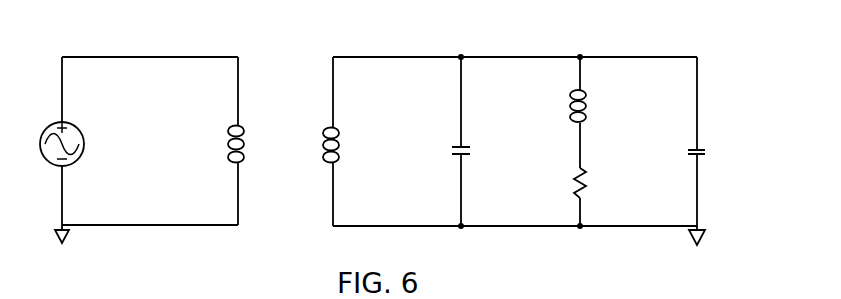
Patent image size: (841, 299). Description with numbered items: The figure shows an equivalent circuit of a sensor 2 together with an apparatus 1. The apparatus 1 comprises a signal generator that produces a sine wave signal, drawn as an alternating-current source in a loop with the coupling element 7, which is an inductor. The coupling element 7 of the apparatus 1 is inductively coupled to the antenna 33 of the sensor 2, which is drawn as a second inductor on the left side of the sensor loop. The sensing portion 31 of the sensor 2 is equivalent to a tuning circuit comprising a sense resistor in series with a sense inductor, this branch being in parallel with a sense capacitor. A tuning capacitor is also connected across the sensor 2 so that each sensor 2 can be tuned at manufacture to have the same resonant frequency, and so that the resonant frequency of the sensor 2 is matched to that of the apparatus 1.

The apparatus 1 is at (152, 227).
The sensor 2 is at (545, 143).
The coupling element 7 is at (239, 125).
The sensing portion 31 is at (657, 55).
The antenna 33 is at (333, 130).